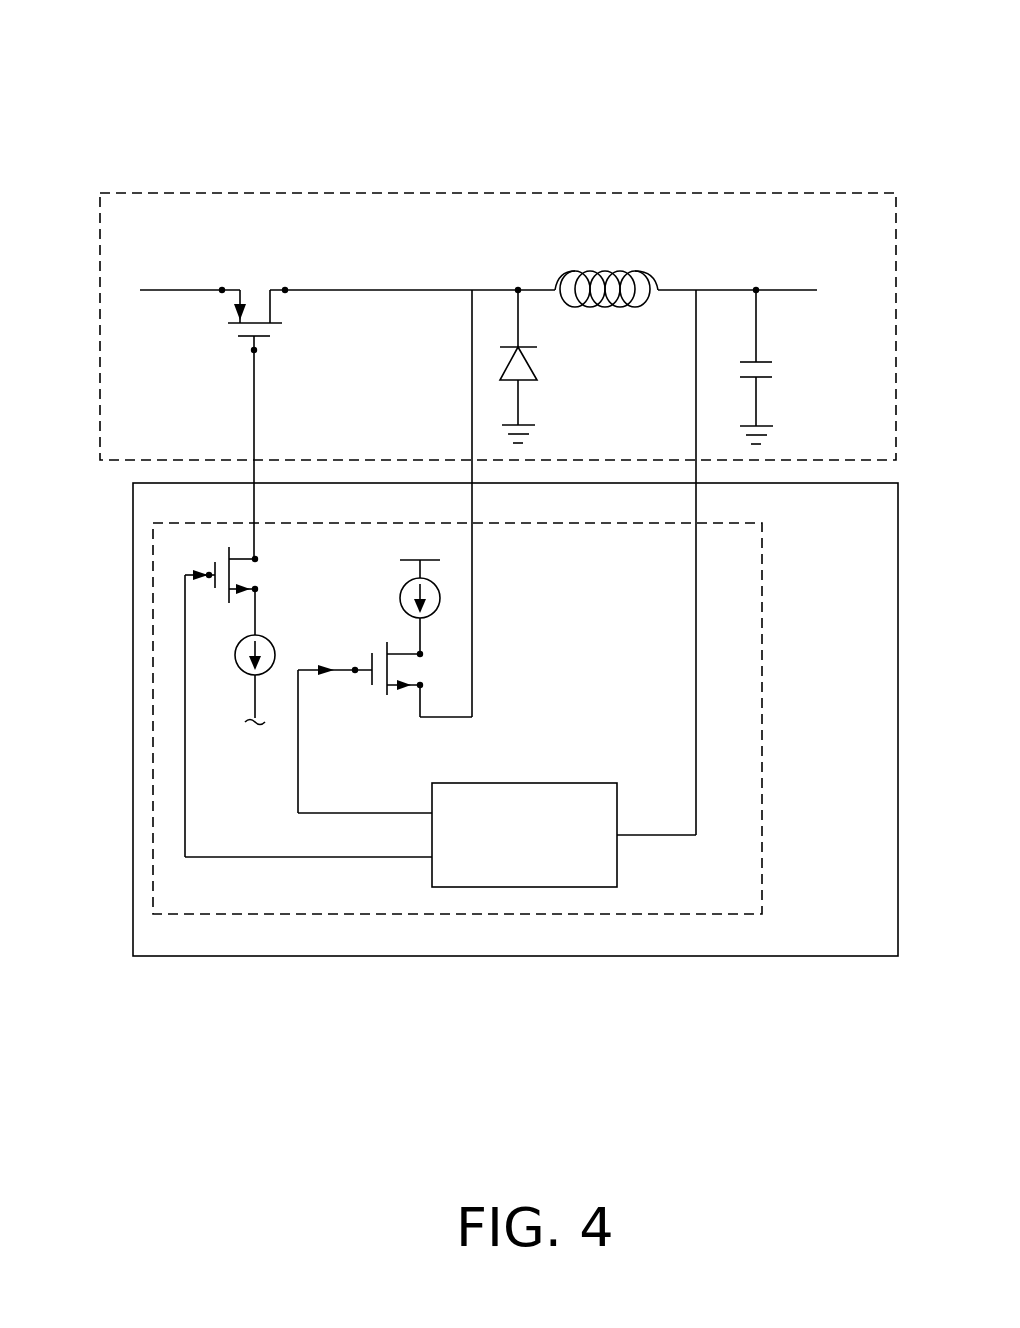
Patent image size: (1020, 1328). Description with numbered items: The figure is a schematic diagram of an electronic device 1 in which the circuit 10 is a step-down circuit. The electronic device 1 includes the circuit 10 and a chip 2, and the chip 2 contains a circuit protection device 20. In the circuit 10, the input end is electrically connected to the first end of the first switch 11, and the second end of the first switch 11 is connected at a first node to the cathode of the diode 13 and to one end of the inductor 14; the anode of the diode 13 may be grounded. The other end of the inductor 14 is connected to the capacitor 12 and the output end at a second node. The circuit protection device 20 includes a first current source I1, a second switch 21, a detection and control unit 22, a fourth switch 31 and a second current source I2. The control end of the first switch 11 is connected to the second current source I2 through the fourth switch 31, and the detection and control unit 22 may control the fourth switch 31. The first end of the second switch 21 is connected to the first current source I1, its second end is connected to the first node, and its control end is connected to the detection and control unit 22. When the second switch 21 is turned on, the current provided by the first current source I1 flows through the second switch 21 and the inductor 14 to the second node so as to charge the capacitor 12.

The electronic device 1 is at (448, 42).
The circuit 10 is at (481, 193).
The first switch 11 is at (250, 284).
The capacitor 12 is at (778, 370).
The diode 13 is at (542, 372).
The inductor 14 is at (605, 268).
The chip 2 is at (515, 958).
The circuit protection device 20 is at (762, 845).
The second switch 21 is at (375, 652).
The detection and control unit 22 is at (564, 835).
The fourth switch 31 is at (258, 577).
The first current source I1 is at (400, 596).
The second current source I2 is at (262, 640).